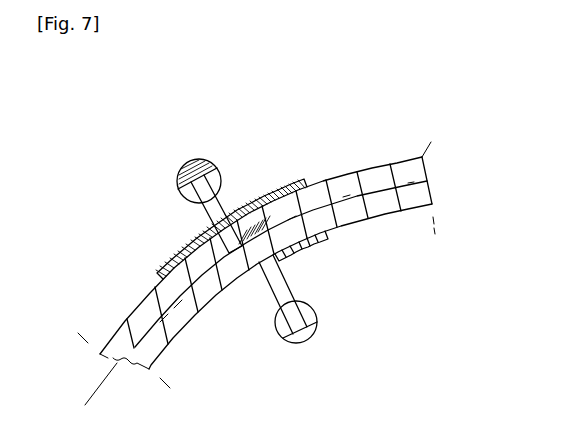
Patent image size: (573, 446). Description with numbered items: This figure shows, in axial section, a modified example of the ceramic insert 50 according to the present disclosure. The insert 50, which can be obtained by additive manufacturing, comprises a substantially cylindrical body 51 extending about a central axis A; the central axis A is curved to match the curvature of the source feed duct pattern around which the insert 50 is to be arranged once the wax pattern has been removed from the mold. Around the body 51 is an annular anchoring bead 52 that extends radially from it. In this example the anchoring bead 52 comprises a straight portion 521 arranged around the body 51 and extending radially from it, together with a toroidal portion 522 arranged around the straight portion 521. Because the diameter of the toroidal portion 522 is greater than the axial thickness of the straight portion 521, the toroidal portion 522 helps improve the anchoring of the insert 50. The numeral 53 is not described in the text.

The insert 50 is at (348, 351).
The body 51 is at (283, 181).
The anchoring bead 52 is at (158, 167).
The straight portion 521 is at (213, 210).
The toroidal portion 522 is at (181, 183).
The lower pin 53 is at (288, 299).
The central axis A is at (435, 180).